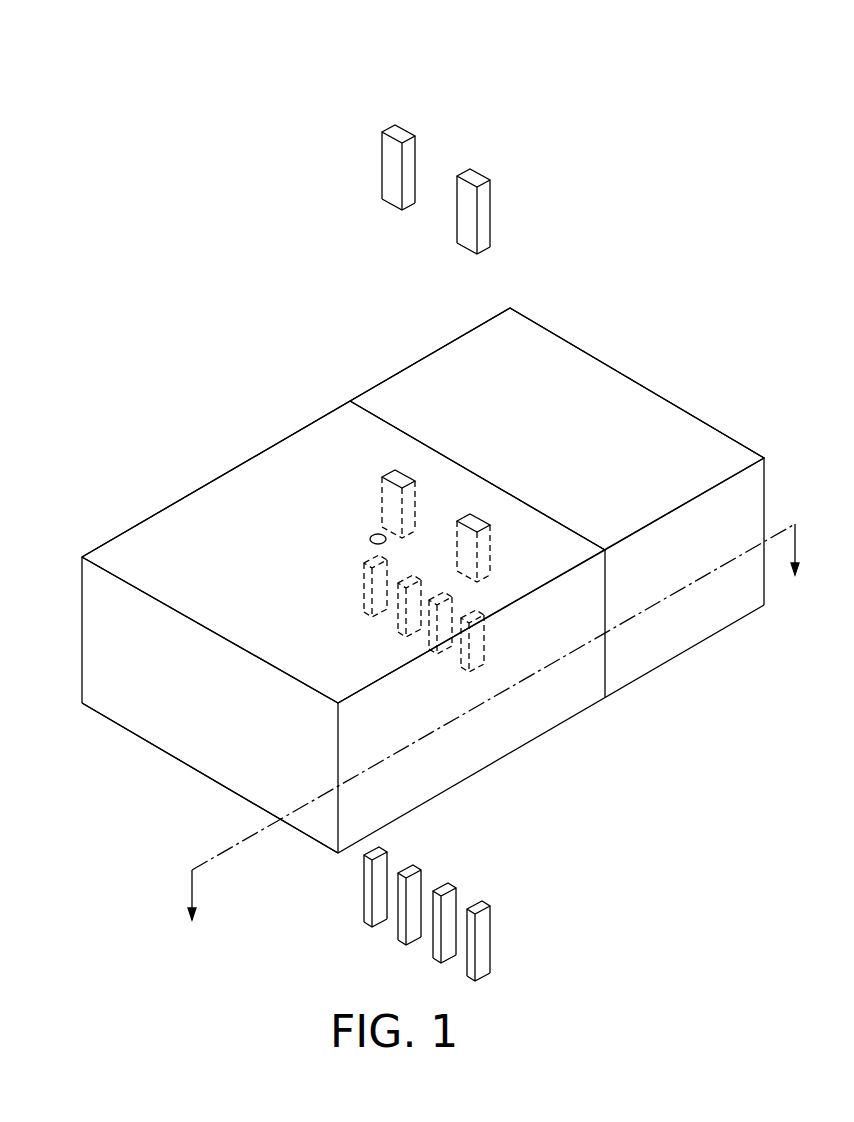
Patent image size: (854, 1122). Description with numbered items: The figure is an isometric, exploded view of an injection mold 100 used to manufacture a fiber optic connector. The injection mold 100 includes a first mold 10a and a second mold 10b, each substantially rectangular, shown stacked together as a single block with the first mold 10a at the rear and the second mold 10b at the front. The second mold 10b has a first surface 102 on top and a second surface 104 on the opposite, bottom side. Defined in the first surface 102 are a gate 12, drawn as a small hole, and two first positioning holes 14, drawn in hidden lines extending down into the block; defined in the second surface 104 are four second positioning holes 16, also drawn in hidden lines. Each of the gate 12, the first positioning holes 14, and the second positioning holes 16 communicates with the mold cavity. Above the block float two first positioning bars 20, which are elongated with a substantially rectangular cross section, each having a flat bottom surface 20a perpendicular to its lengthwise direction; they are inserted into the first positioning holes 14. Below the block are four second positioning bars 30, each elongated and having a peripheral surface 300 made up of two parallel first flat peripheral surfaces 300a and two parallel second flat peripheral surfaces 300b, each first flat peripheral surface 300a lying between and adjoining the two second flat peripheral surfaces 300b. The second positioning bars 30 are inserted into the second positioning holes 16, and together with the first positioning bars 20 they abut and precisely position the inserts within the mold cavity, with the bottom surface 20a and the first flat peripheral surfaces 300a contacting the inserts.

The injection mold 100 is at (168, 75).
The first mold 10a is at (447, 345).
The second mold 10b is at (307, 423).
The first surface 102 is at (170, 538).
The second surface 104 is at (122, 728).
The gate 12 is at (370, 535).
The first positioning holes 14 is at (395, 468).
The second positioning holes 16 is at (475, 660).
The first positioning bars 20 is at (497, 155).
The bottom surface 20a is at (485, 252).
The second positioning bars 30 is at (493, 885).
The peripheral surface 300 is at (637, 913).
The first flat peripheral surfaces 300a is at (482, 940).
The second flat peripheral surfaces 300b is at (475, 963).